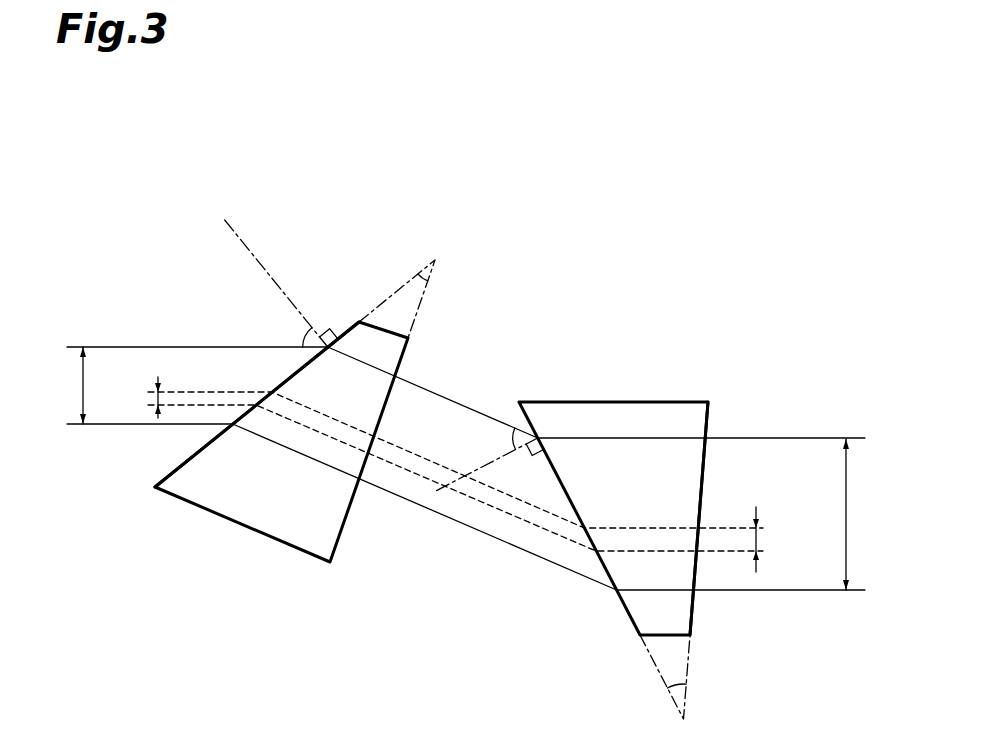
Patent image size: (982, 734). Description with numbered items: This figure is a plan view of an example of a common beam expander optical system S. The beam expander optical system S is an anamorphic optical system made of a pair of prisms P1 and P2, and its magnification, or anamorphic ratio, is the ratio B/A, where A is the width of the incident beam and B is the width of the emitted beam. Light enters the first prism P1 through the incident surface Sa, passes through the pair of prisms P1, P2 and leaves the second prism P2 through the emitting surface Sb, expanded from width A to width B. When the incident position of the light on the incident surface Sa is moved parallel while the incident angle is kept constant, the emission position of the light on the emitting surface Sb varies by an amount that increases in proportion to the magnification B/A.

The beam expander optical system S is at (750, 223).
The prism P1 is at (243, 525).
The prism P2 is at (625, 400).
The incident surface Sa is at (188, 459).
The emitting surface Sb is at (707, 422).
The incident beam width A is at (75, 385).
The emitted beam width B is at (859, 514).